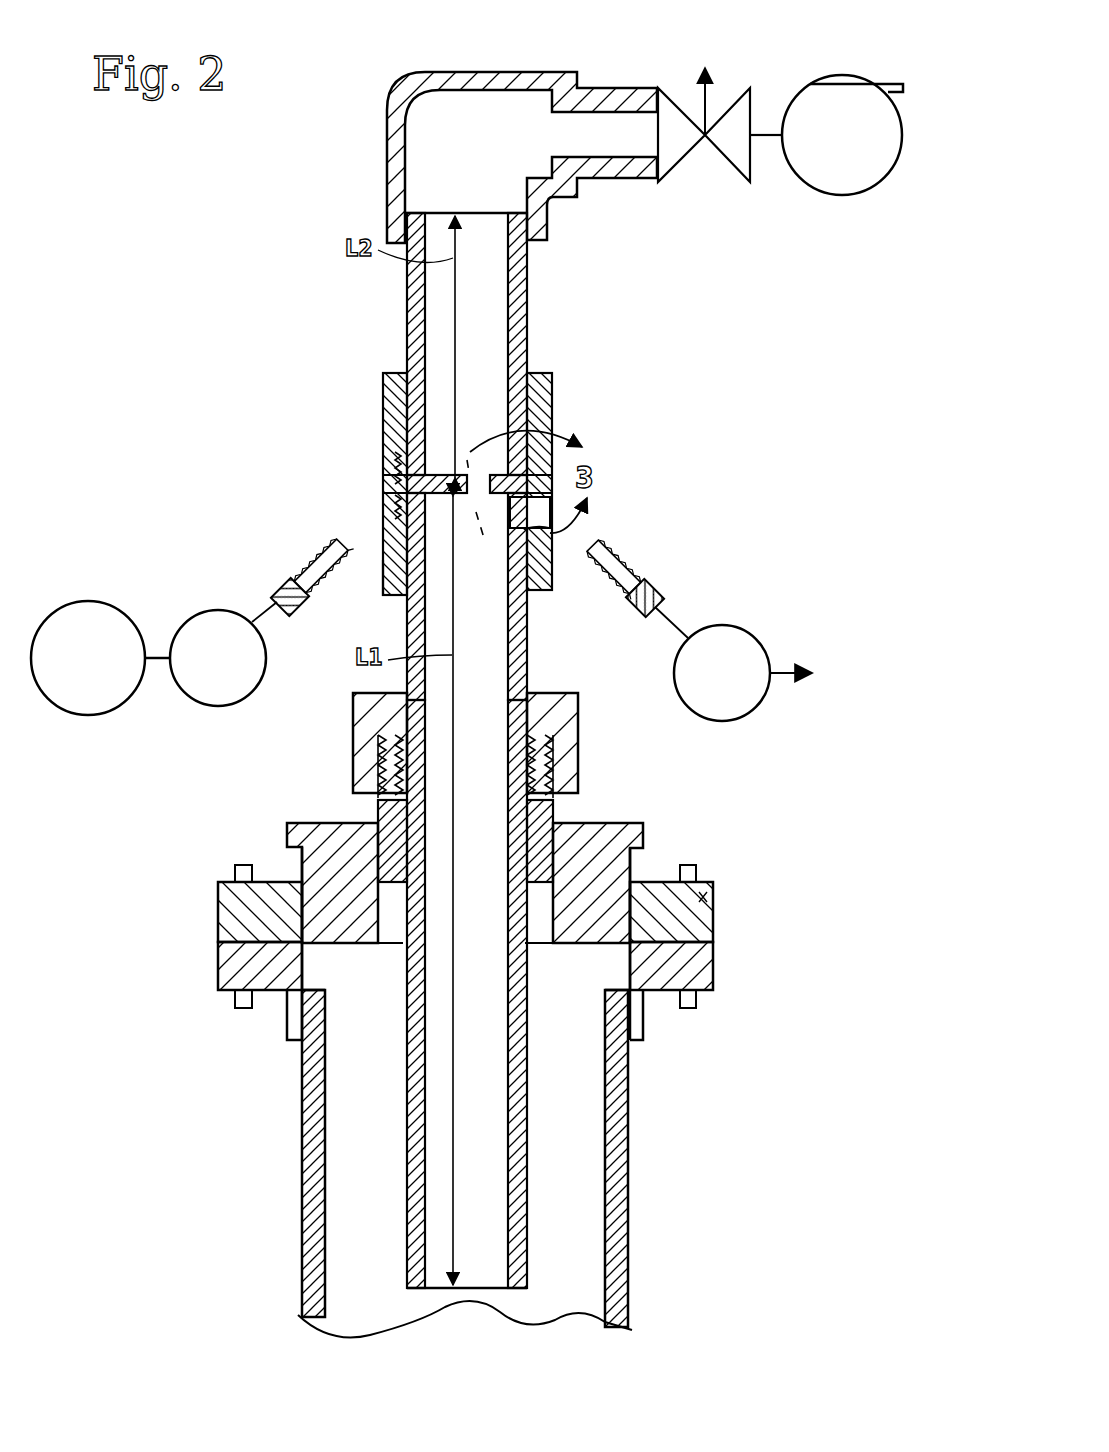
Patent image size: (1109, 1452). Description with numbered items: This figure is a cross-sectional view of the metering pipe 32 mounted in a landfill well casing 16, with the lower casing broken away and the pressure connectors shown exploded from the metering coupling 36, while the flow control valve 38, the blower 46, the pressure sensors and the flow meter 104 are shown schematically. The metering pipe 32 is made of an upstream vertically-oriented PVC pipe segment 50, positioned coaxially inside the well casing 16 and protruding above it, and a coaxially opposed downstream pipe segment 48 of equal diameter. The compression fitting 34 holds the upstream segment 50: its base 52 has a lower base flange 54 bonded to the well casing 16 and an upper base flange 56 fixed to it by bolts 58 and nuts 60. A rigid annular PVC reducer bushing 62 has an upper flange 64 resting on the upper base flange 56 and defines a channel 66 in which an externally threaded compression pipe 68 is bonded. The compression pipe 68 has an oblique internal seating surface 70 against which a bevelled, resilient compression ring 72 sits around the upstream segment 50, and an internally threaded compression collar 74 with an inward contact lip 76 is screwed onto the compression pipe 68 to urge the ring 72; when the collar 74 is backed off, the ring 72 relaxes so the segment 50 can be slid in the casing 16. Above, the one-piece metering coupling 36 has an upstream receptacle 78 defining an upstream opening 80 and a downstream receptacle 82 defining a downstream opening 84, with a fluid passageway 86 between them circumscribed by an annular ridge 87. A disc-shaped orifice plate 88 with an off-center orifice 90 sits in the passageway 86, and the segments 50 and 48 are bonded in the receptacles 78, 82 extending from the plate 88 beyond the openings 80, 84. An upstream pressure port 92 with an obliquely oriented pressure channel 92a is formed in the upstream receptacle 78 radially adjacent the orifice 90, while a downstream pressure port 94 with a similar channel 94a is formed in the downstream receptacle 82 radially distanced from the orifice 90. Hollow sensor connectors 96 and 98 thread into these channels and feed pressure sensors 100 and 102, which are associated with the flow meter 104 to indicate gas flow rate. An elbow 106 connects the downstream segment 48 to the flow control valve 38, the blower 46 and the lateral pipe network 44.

The well casing 16 is at (618, 1100).
The metering pipe 32 is at (740, 402).
The compression fitting 34 is at (630, 773).
The metering coupling 36 is at (338, 351).
The flow control valve 38 is at (740, 172).
The lateral pipe network 44 is at (766, 133).
The blower 46 is at (853, 74).
The downstream pipe segment 48 is at (415, 300).
The upstream pipe segment 50 is at (415, 1086).
The base 52 is at (612, 940).
The lower base flange 54 is at (702, 975).
The upper base flange 56 is at (708, 892).
The bolts 58 is at (689, 864).
The nuts 60 is at (686, 1006).
The reducer bushing 62 is at (627, 830).
The upper flange 64 is at (300, 830).
The channel 66 is at (393, 928).
The compression pipe 68 is at (376, 790).
The seating surface 70 is at (555, 798).
The compression ring 72 is at (547, 746).
The compression collar 74 is at (357, 732).
The contact lip 76 is at (535, 693).
The upstream receptacle 78 is at (395, 588).
The upstream opening 80 is at (435, 608).
The downstream receptacle 82 is at (537, 373).
The downstream opening 84 is at (497, 298).
The fluid passageway 86 is at (496, 626).
The annular ridge 87 is at (410, 472).
The orifice plate 88 is at (400, 406).
The orifice 90 is at (462, 470).
The upstream pressure port 92 is at (507, 517).
The pressure channel 92a is at (558, 532).
The downstream pressure port 94 is at (395, 462).
The downstream pressure port channel 94a is at (396, 492).
The upstream pressure sensor connector 96 is at (660, 592).
The downstream pressure sensor connector 98 is at (280, 580).
The pressure sensor 100 is at (741, 628).
The pressure sensor 102 is at (221, 610).
The flowmeter 104 is at (88, 601).
The elbow 106 is at (507, 85).